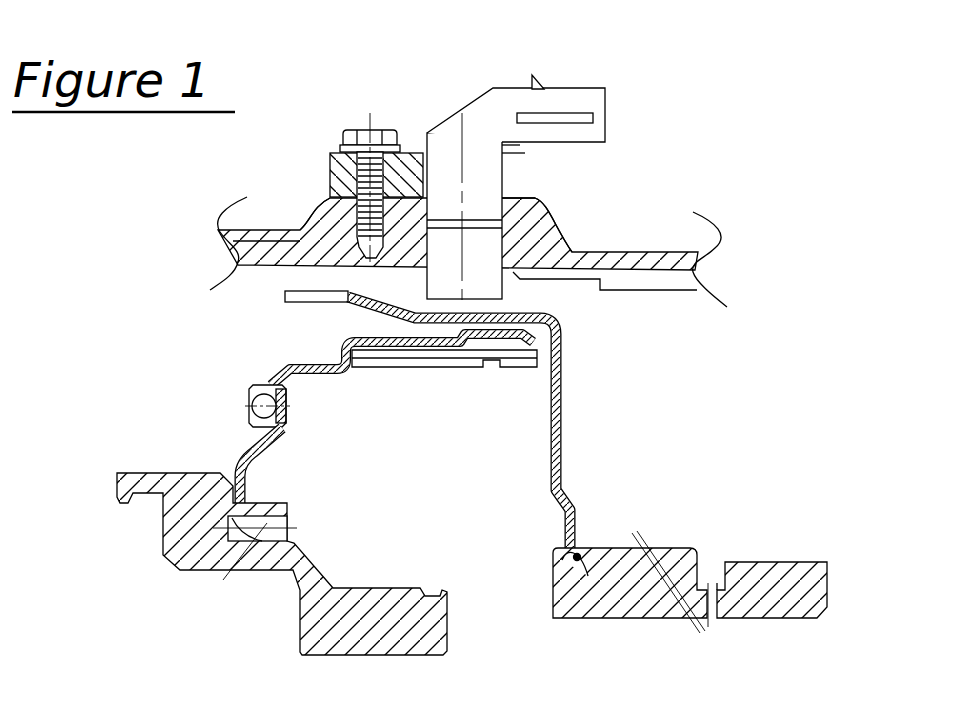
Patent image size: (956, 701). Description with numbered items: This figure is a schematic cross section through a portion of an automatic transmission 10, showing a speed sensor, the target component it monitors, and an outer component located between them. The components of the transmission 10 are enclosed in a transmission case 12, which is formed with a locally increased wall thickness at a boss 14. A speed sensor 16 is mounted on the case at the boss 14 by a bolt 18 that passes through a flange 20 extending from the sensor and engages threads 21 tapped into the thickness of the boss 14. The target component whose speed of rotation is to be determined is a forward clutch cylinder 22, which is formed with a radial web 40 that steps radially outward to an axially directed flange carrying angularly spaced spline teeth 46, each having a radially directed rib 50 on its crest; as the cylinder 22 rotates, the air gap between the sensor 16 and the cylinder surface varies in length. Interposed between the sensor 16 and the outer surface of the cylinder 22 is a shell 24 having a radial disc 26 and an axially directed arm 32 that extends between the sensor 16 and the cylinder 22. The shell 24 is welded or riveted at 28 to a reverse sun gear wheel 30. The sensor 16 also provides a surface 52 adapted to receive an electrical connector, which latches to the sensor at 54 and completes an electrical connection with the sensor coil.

The transmission 10 is at (687, 143).
The transmission case 12 is at (610, 257).
The boss 14 is at (535, 205).
The speed sensor 16 is at (518, 165).
The bolt 18 is at (364, 137).
The flange 20 is at (336, 162).
The threads 21 is at (333, 218).
The forward clutch cylinder 22 is at (337, 498).
The shell 24 is at (646, 395).
The radial disc 26 is at (558, 430).
The weld or rivet 28 is at (586, 578).
The reverse sun gear wheel 30 is at (598, 607).
The axially directed arm 32 is at (543, 293).
The radial web 40 is at (275, 430).
The spline teeth 46 is at (360, 336).
The radially directed rib 50 is at (533, 333).
The surface 52 is at (590, 87).
The latch 54 is at (538, 77).